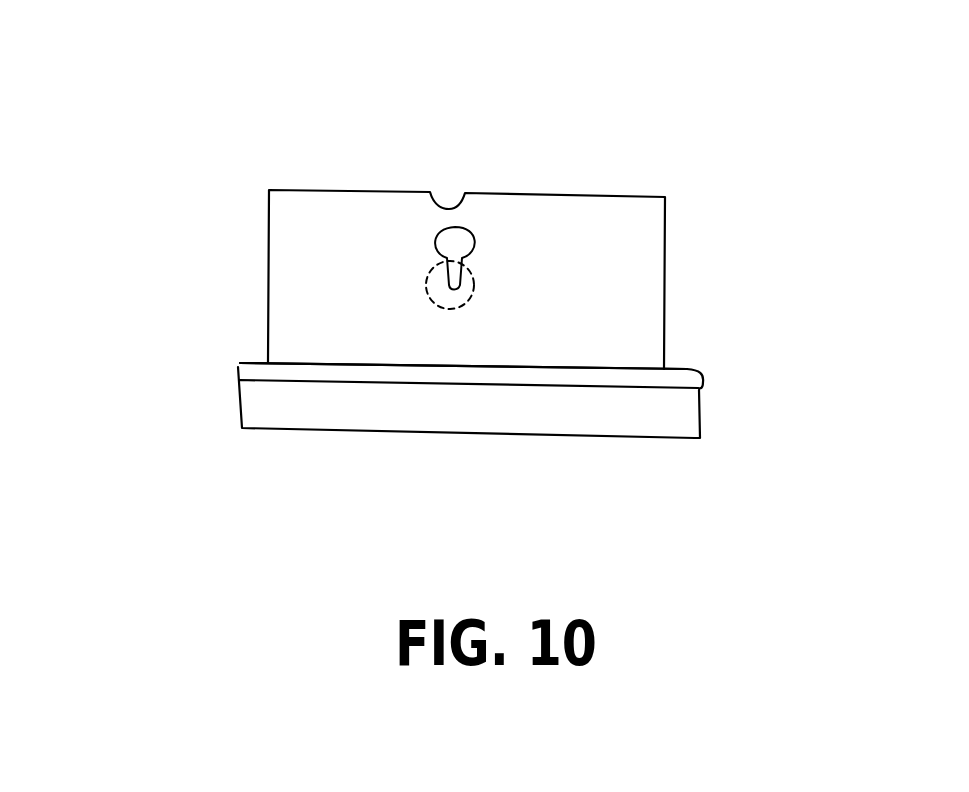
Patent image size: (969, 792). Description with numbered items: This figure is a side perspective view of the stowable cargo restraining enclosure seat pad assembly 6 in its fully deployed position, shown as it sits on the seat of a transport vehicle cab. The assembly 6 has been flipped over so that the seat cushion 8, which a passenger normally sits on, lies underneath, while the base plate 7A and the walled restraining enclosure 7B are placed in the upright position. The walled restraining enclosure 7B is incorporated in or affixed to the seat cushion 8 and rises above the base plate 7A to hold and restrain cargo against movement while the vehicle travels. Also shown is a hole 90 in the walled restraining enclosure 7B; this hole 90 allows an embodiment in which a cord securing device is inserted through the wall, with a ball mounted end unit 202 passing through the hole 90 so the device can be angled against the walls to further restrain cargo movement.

The stowable cargo restraining enclosure seat pad assembly 6 is at (457, 310).
The base plate 7A is at (243, 373).
The walled restraining enclosure 7B is at (220, 320).
The seat cushion 8 is at (303, 405).
The hole 90 is at (455, 247).
The ball mounted end unit 202 is at (478, 277).